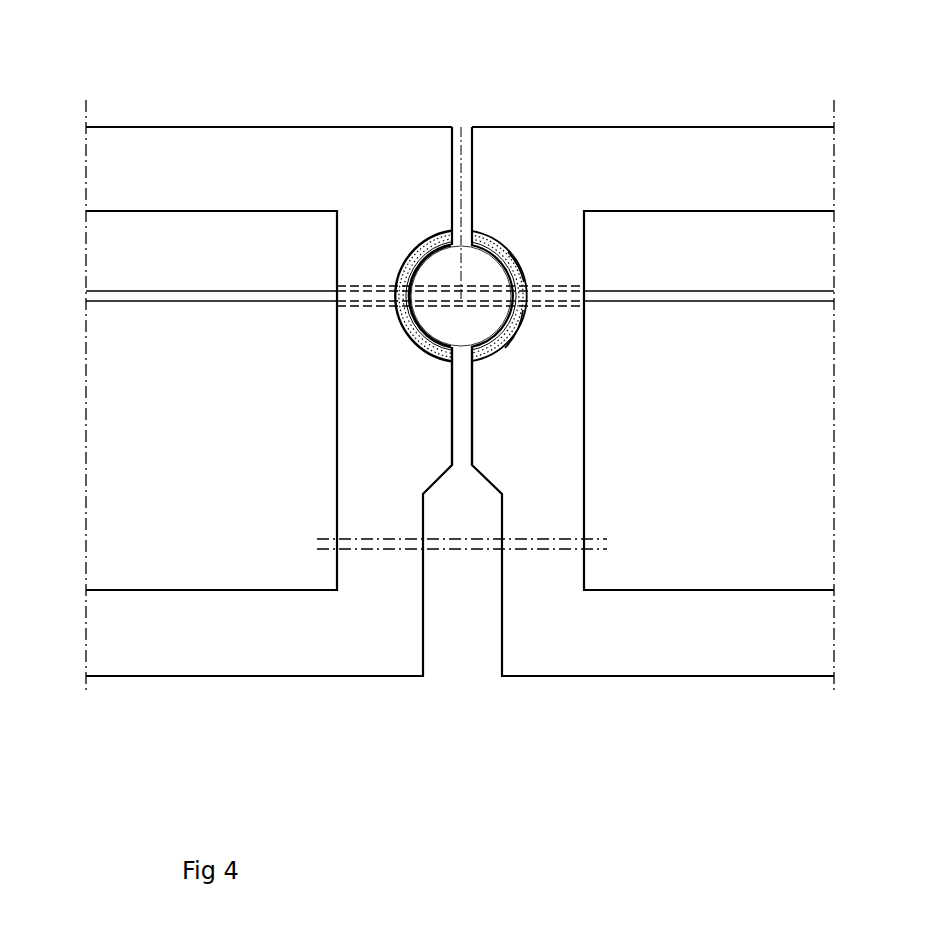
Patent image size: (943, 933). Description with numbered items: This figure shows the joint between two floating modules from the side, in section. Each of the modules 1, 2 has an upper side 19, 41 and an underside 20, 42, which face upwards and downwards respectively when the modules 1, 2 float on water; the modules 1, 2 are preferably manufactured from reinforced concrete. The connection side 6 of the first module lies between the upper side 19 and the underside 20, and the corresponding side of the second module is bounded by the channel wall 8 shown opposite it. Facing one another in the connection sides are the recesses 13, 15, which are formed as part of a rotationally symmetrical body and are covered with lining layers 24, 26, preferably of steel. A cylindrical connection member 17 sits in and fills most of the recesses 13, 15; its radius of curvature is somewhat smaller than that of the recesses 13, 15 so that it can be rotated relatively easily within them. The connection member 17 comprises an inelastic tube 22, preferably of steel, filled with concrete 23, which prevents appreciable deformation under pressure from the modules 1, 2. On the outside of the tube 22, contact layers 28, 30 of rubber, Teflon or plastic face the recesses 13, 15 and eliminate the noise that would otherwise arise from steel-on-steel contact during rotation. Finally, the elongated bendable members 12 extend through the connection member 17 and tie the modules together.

The module 1 is at (200, 416).
The module 2 is at (734, 416).
The connection side 6 is at (452, 434).
The lower channel wall 8 is at (472, 446).
The elongated bendable member 12 is at (700, 295).
The recess 13 is at (405, 325).
The recess 15 is at (523, 323).
The connection member 17 is at (506, 152).
The upper side 19 is at (232, 127).
The underside 20 is at (222, 676).
The tube 22 is at (510, 348).
The concrete 23 is at (480, 268).
The lining layer 24 is at (430, 235).
The lining layer 26 is at (492, 360).
The contact layer 28 is at (406, 258).
The contact layer 30 is at (520, 268).
The upper side 41 is at (700, 127).
The underside 42 is at (691, 676).